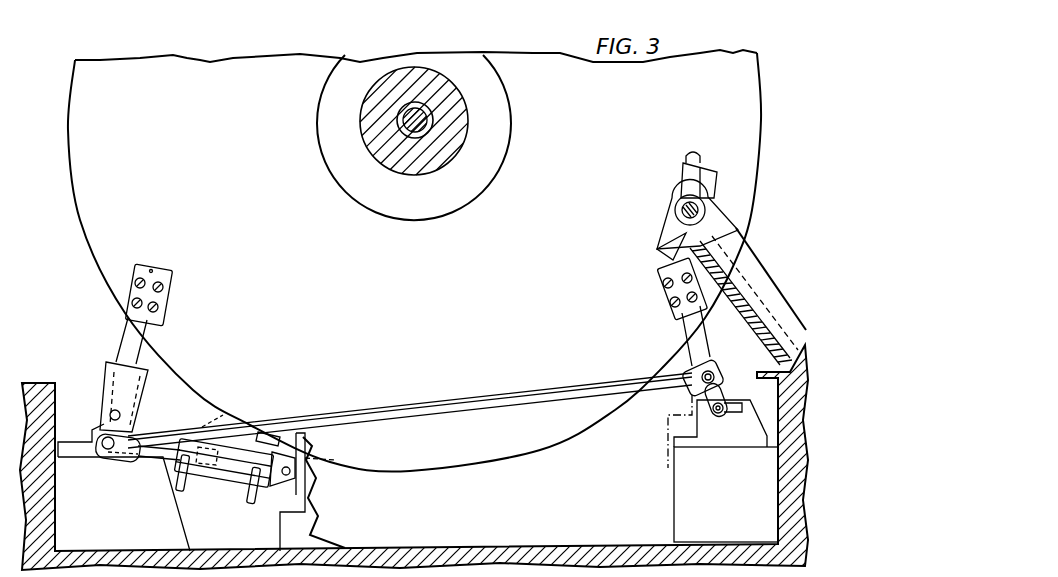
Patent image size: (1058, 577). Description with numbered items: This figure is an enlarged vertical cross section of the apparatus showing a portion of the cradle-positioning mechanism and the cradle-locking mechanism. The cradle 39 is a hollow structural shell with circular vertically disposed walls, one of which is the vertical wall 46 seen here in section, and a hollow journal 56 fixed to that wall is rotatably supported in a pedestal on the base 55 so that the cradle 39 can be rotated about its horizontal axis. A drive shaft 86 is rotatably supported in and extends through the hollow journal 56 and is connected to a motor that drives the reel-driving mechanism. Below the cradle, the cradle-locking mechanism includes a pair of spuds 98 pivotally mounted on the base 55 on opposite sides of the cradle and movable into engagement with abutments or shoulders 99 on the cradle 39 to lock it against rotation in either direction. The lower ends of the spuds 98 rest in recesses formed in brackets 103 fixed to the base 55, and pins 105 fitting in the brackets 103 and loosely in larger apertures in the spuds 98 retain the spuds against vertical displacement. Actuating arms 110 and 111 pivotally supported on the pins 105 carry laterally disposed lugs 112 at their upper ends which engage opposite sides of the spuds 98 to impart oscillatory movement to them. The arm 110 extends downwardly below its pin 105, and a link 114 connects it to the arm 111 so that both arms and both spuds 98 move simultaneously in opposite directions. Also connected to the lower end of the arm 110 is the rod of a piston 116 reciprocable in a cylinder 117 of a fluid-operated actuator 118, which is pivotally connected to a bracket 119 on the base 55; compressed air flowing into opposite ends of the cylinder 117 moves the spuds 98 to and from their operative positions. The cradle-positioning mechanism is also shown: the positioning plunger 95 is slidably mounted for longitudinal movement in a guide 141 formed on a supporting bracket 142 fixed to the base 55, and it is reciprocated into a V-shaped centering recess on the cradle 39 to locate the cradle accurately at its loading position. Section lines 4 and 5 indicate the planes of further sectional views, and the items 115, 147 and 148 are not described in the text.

The cradle 39 is at (742, 100).
The vertical wall 46 is at (477, 460).
The hollow journal 56 is at (362, 113).
The drive shaft 86 is at (413, 133).
The base 55 is at (36, 385).
The section line 4 is at (693, 163).
The section line 5 is at (154, 263).
The abutments or shoulders 99 is at (137, 320).
The spuds 98 is at (128, 344).
The lugs 112 is at (106, 364).
The pins 105 is at (121, 410).
The actuating arm 110 is at (75, 440).
The brackets 103 is at (137, 422).
The rod 115 is at (157, 458).
The cylinder 117 is at (226, 484).
The piston 116 is at (230, 416).
The fluid-operated actuator 118 is at (267, 432).
The bracket 119 is at (316, 437).
The link 114 is at (462, 403).
The actuating arm 111 is at (690, 393).
The positioning plunger 95 is at (675, 208).
The bracket member 147 is at (680, 175).
The pin 148 is at (688, 151).
The guide 141 is at (730, 200).
The supporting bracket 142 is at (757, 268).